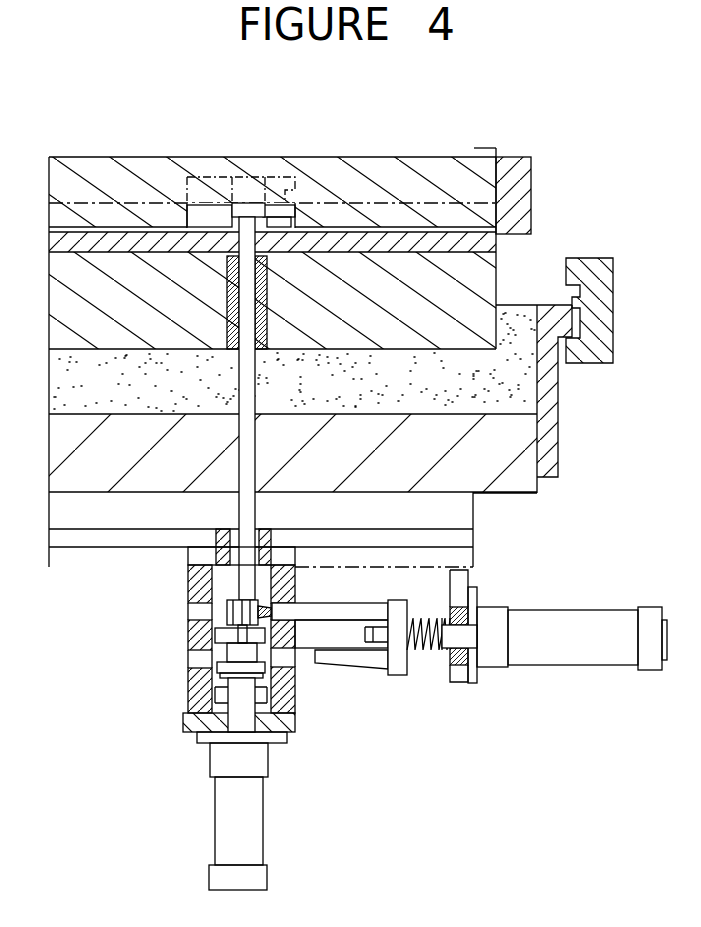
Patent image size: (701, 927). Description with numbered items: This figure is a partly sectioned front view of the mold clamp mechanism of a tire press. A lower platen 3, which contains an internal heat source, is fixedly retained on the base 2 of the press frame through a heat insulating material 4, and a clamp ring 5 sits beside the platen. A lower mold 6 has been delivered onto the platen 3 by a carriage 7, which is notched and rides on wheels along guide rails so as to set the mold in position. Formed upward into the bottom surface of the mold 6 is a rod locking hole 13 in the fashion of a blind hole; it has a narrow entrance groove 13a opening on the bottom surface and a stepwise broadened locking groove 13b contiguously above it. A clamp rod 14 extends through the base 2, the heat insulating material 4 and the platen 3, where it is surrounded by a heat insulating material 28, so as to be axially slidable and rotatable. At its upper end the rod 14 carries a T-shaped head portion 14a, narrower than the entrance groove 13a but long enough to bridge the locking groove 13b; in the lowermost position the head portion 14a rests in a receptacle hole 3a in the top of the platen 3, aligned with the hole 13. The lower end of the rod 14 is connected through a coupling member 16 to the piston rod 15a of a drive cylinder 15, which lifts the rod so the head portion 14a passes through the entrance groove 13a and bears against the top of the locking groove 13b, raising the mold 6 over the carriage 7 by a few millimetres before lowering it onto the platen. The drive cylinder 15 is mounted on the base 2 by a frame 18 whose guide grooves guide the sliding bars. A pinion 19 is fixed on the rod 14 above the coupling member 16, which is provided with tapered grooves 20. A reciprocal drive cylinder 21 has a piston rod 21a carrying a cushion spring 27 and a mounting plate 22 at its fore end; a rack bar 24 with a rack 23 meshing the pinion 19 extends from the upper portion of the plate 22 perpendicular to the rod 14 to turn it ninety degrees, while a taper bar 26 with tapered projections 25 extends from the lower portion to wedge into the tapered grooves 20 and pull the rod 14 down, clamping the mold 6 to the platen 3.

The base 2 is at (488, 470).
The lower platen 3 is at (72, 307).
The receptacle hole 3a is at (229, 250).
The heat insulating material 4 is at (70, 385).
The clamp ring 5 is at (615, 298).
The lower mold 6 is at (484, 148).
The carriage 7 is at (517, 195).
The rod locking hole 13 is at (290, 208).
The entrance groove 13a is at (272, 226).
The locking groove 13b is at (212, 212).
The clamp rod 14 is at (250, 428).
The head portion 14a is at (242, 204).
The drive cylinder 15 is at (232, 816).
The piston rod 15a is at (240, 718).
The coupling member 16 is at (208, 639).
The frame 18 is at (215, 675).
The pinion 19 is at (297, 601).
The tapered grooves 20 is at (223, 648).
The reciprocal drive cylinder 21 is at (565, 648).
The piston rod 21a is at (455, 632).
The mounting plate 22 is at (393, 605).
The rack 23 is at (262, 598).
The rack bar 24 is at (362, 605).
The tapered projections 25 is at (352, 670).
The taper bar 26 is at (308, 658).
The cushion spring 27 is at (440, 612).
The heat insulating material 28 is at (268, 298).